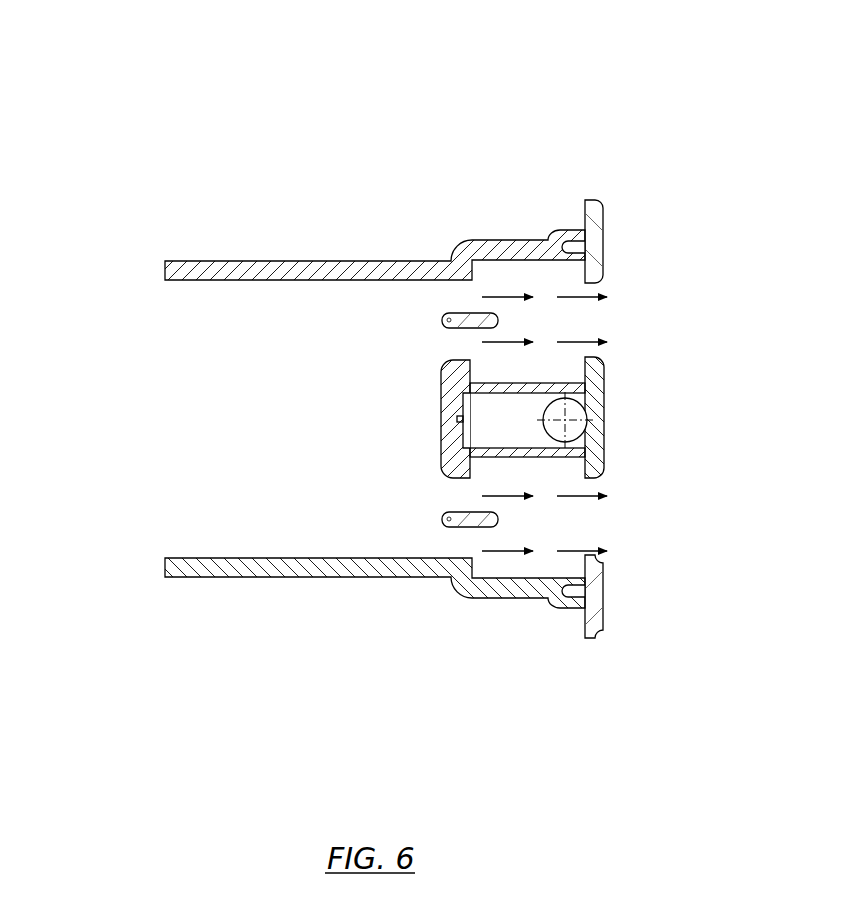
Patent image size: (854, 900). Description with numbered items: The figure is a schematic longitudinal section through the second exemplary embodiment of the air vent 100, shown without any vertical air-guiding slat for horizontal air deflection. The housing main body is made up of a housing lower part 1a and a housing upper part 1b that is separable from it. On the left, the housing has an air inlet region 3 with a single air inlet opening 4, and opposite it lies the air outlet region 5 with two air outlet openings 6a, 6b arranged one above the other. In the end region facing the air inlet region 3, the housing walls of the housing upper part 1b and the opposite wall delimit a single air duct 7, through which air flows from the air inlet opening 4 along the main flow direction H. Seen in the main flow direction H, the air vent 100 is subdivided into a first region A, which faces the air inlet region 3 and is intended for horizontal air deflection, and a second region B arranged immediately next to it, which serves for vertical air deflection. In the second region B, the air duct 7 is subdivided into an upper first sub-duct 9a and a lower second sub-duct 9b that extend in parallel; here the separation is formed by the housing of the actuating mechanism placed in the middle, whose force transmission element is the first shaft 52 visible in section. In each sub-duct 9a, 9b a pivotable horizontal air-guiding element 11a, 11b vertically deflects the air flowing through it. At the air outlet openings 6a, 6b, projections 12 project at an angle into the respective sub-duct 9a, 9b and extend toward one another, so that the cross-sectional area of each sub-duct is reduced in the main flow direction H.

The air vent 100 is at (99, 37).
The housing lower part 1a is at (218, 572).
The housing upper part 1b is at (212, 273).
The air inlet region 3 is at (237, 602).
The air inlet opening 4 is at (172, 368).
The air outlet region 5 is at (605, 182).
The air outlet opening 6a is at (614, 320).
The air outlet opening 6b is at (614, 528).
The air duct 7 is at (362, 417).
The first sub-duct 9a is at (548, 333).
The second sub-duct 9b is at (548, 529).
The air-guiding element 11a is at (478, 313).
The air-guiding element 11b is at (447, 522).
The projection 12 is at (593, 275).
The first shaft 52 is at (566, 420).
The first region A is at (445, 117).
The second region B is at (605, 117).
The main flow direction H is at (265, 411).